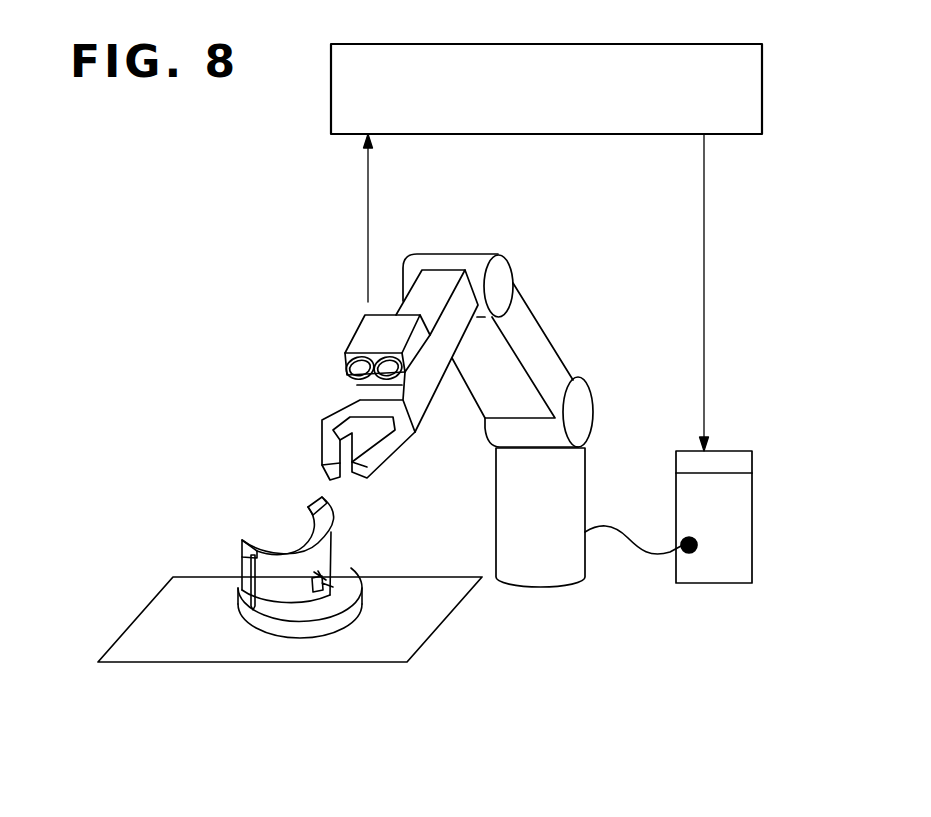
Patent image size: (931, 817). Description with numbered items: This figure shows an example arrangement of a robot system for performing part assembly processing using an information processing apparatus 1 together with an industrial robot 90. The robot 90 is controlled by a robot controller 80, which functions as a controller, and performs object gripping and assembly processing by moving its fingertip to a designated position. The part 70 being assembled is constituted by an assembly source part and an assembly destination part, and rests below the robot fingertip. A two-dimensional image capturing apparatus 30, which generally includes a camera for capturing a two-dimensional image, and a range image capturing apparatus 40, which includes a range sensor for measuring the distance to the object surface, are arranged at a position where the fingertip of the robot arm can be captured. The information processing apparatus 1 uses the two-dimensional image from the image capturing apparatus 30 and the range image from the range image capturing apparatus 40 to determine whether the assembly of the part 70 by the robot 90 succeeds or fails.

The information processing apparatus 1 is at (661, 44).
The two-dimensional image capturing apparatus 30 is at (357, 328).
The range image capturing apparatus 40 is at (353, 378).
The part 70 is at (250, 540).
The robot controller 80 is at (715, 584).
The robot 90 is at (542, 588).